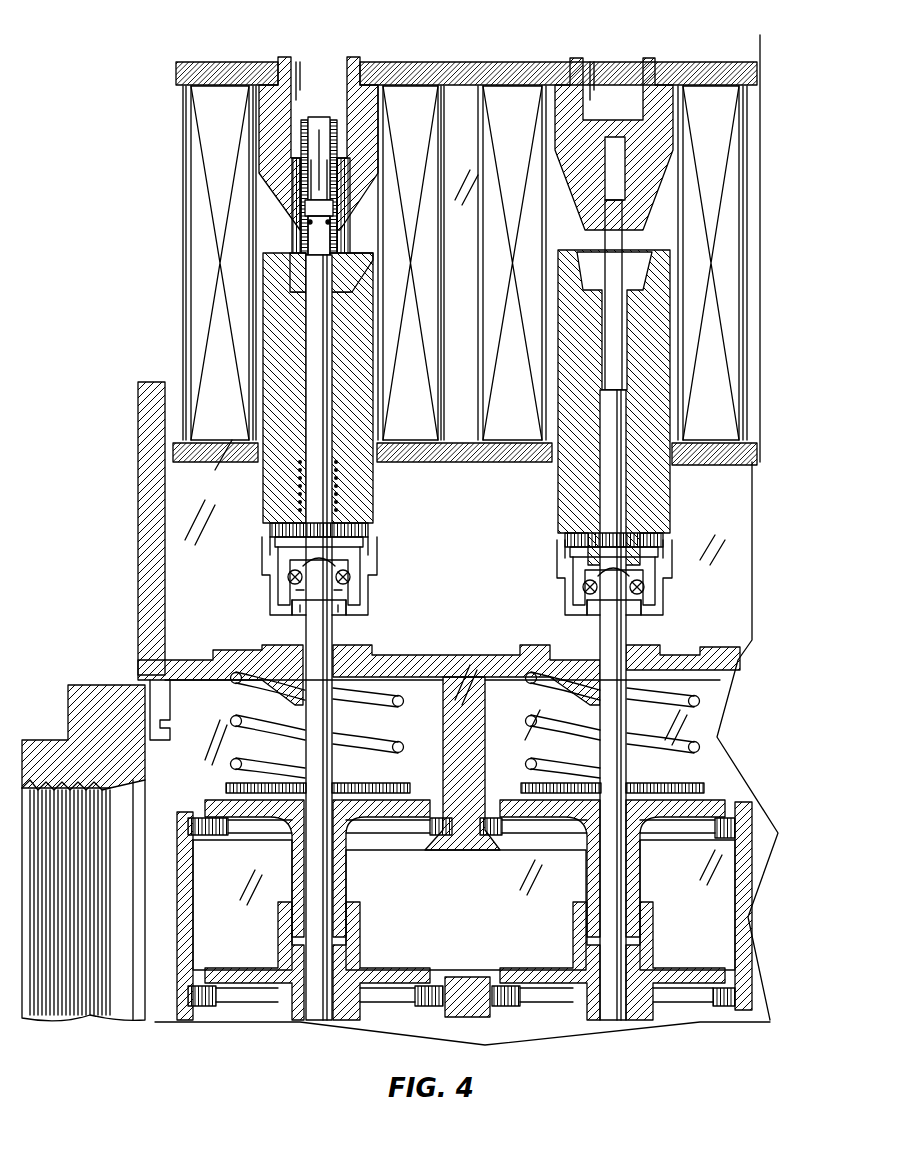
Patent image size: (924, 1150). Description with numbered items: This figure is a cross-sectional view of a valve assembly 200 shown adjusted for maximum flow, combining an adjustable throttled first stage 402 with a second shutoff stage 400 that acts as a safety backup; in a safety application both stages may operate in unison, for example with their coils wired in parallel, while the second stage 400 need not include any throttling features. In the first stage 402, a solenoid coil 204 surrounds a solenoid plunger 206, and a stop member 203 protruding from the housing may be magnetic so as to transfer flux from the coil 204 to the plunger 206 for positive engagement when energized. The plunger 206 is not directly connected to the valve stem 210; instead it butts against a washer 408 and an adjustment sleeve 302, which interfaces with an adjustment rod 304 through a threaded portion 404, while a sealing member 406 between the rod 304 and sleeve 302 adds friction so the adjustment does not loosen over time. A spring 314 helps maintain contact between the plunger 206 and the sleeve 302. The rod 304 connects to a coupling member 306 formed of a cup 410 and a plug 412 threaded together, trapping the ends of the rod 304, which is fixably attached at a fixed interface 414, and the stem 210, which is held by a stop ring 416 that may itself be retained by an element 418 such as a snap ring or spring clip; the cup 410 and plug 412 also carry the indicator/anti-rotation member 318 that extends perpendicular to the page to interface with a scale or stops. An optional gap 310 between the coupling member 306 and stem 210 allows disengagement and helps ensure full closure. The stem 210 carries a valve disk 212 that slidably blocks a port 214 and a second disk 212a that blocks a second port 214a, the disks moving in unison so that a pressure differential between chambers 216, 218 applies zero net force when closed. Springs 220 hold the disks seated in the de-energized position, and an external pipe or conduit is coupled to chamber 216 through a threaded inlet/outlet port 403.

The valve assembly 200 is at (92, 48).
The stop member 203 is at (280, 58).
The solenoid coil 204 is at (462, 575).
The solenoid plunger 206 is at (462, 575).
The valve stem 210 is at (466, 637).
The valve disk 212 is at (222, 800).
The second disk 212a is at (258, 968).
The valve port 214 is at (415, 835).
The second port 214a is at (278, 1000).
The chamber 216 is at (442, 862).
The chamber 218 is at (464, 905).
The springs 220 is at (350, 731).
The adjustment sleeve 302 is at (306, 252).
The adjustment rod 304 is at (318, 118).
The coupling member 306 is at (256, 590).
The gap 310 is at (298, 598).
The spring 314 is at (340, 491).
The indicator/anti-rotation member 318 is at (265, 542).
The second shutoff stage 400 is at (753, 52).
The first stage 402 is at (473, 30).
The threaded inlet/outlet port 403 is at (462, 575).
The threaded portion 404 is at (340, 222).
The sealing member 406 is at (300, 232).
The washer 408 is at (344, 258).
The cup 410 is at (373, 564).
The plug 412 is at (365, 540).
The fixed interface 414 is at (362, 524).
The stop ring 416 is at (348, 582).
The retainer 418 is at (340, 615).